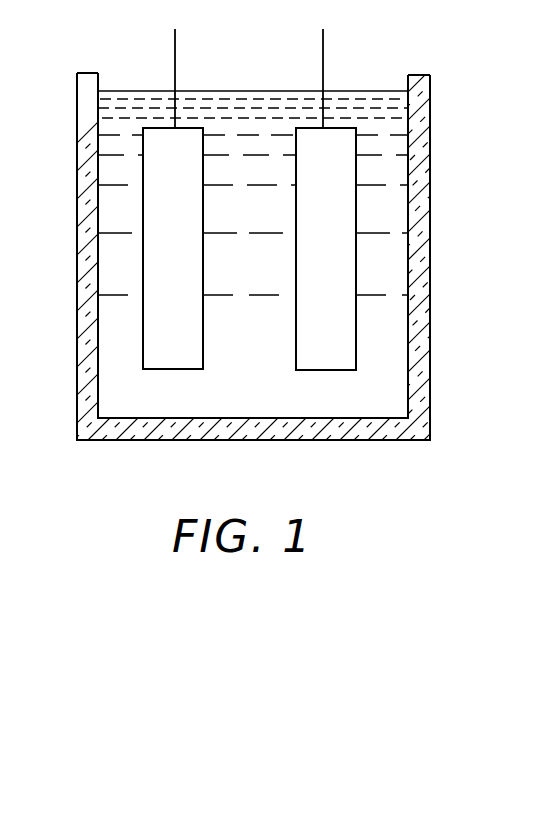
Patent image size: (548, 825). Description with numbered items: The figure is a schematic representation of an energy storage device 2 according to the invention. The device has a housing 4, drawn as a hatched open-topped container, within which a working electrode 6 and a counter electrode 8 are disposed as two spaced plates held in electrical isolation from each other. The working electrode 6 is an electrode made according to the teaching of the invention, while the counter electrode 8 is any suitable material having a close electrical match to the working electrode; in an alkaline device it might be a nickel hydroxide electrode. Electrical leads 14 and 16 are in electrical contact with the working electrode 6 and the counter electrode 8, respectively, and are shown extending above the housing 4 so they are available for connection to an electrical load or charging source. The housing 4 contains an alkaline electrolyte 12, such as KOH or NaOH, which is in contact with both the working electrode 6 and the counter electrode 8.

The energy storage device 2 is at (258, 243).
The housing 4 is at (430, 316).
The working electrode 6 is at (158, 172).
The counter electrode 8 is at (347, 210).
The alkaline electrolyte 12 is at (259, 340).
The electrical lead 14 is at (175, 43).
The electrical lead 16 is at (323, 53).